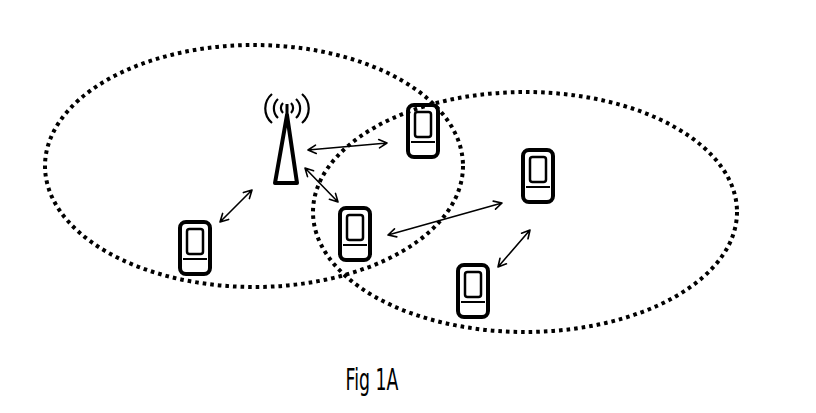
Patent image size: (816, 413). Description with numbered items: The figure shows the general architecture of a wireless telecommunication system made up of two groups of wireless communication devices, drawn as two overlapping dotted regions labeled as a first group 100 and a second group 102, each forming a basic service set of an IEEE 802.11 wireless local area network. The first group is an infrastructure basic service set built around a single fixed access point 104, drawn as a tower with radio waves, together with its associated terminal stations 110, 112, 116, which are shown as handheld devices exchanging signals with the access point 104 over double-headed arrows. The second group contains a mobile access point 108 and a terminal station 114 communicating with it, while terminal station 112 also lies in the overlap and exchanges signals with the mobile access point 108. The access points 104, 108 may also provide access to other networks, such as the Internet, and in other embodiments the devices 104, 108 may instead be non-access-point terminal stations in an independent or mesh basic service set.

The first wireless network 100 is at (143, 114).
The second wireless network 102 is at (675, 162).
The access point 104 is at (279, 168).
The access point 108 is at (523, 161).
The terminal station 110 is at (180, 233).
The terminal station 112 is at (340, 219).
The terminal station 114 is at (458, 276).
The terminal station 116 is at (408, 111).